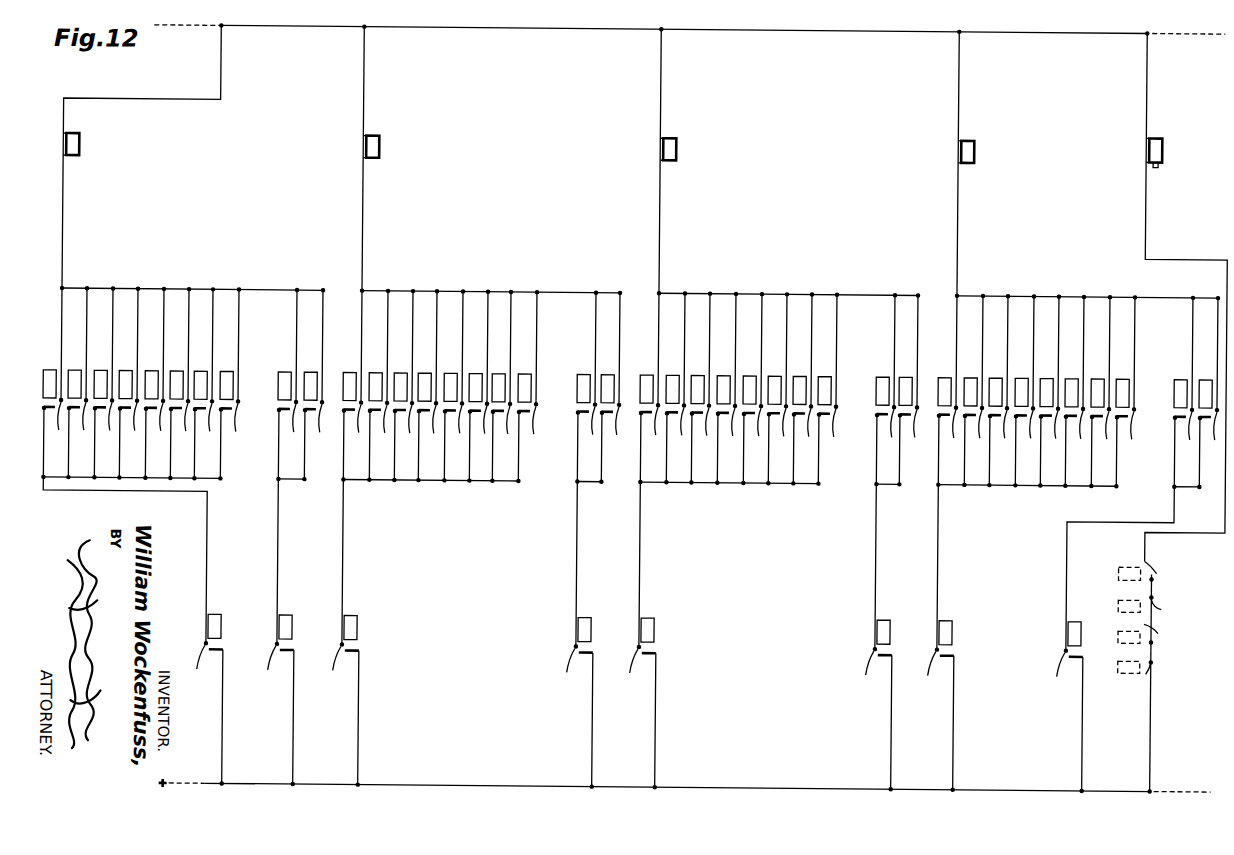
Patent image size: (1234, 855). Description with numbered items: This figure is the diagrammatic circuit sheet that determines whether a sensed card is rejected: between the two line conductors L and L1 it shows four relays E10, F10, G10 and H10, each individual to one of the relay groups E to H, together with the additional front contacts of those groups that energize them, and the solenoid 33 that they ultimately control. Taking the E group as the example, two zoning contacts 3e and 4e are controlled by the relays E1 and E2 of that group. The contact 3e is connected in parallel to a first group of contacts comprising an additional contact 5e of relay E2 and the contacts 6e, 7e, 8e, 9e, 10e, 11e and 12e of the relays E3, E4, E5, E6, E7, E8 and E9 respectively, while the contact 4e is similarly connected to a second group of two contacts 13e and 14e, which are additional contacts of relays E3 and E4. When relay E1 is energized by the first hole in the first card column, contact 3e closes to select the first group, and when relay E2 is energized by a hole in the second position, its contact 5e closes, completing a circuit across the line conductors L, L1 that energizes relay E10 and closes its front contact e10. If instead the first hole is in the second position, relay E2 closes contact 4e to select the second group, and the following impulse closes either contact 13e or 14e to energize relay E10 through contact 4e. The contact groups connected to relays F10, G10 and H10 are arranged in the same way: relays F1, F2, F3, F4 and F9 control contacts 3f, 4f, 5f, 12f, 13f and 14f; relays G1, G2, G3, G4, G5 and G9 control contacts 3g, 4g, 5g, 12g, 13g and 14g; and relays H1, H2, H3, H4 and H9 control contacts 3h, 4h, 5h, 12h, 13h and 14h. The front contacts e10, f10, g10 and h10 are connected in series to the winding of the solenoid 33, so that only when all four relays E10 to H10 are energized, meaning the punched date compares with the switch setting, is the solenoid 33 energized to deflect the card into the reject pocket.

The line conductor L1 is at (262, 30).
The line conductor L is at (467, 782).
The relay E10 is at (78, 144).
The relay F10 is at (378, 144).
The relay G10 is at (675, 144).
The relay H10 is at (973, 144).
The solenoid 33 is at (1161, 141).
The relay E1 is at (217, 612).
The relay E2 is at (53, 368).
The relay E3 is at (78, 368).
The relay E4 is at (104, 368).
The relay E5 is at (129, 368).
The relay E6 is at (155, 368).
The relay E7 is at (180, 368).
The relay E8 is at (204, 368).
The relay E9 is at (230, 368).
The zoning contact 3e is at (205, 714).
The zoning contact 4e is at (276, 715).
The additional contact 5e is at (53, 439).
The contact 6e is at (78, 439).
The contact 7e is at (104, 439).
The contact 8e is at (129, 440).
The contact 9e is at (155, 440).
The contact 10e is at (181, 440).
The contact 11e is at (205, 440).
The contact 12e is at (231, 440).
The additional contact 13e is at (289, 441).
The additional contact 14e is at (315, 441).
The relay F1 is at (353, 612).
The relay F2 is at (353, 368).
The relay F3 is at (379, 368).
The relay F4 is at (611, 368).
The relay F9 is at (528, 368).
The zoning contact 3f is at (342, 715).
The zoning contact 4f is at (576, 717).
The additional contact 5f is at (353, 441).
The contact 12f is at (530, 443).
The additional contact 13f is at (589, 444).
The additional contact 14f is at (613, 444).
The relay G1 is at (650, 612).
The relay G2 is at (650, 368).
The relay G3 is at (886, 368).
The relay G4 is at (909, 368).
The relay G5 is at (727, 368).
The relay G9 is at (828, 368).
The zoning contact 3g is at (638, 718).
The zoning contact 4g is at (874, 720).
The additional contact 5g is at (650, 444).
The contact 12g is at (829, 446).
The additional contact 13g is at (887, 446).
The additional contact 14g is at (910, 446).
The relay H1 is at (948, 612).
The relay H2 is at (948, 368).
The relay H3 is at (1184, 368).
The relay H4 is at (1209, 368).
The relay H9 is at (1126, 368).
The zoning contact 3h is at (936, 721).
The zoning contact 4h is at (1065, 722).
The additional contact 5h is at (948, 447).
The contact 12h is at (1129, 448).
The additional contact 13h is at (1185, 449).
The additional contact 14h is at (1210, 449).
The front contact e10 is at (1168, 570).
The front contact f10 is at (1171, 605).
The front contact g10 is at (1168, 633).
The front contact h10 is at (1169, 665).